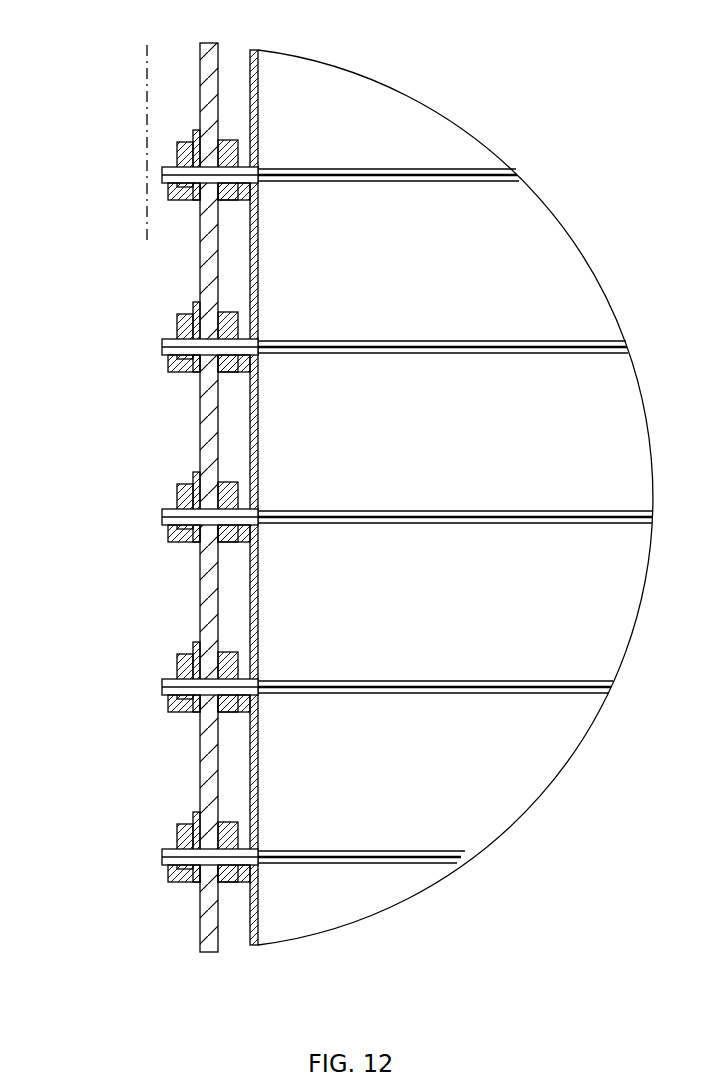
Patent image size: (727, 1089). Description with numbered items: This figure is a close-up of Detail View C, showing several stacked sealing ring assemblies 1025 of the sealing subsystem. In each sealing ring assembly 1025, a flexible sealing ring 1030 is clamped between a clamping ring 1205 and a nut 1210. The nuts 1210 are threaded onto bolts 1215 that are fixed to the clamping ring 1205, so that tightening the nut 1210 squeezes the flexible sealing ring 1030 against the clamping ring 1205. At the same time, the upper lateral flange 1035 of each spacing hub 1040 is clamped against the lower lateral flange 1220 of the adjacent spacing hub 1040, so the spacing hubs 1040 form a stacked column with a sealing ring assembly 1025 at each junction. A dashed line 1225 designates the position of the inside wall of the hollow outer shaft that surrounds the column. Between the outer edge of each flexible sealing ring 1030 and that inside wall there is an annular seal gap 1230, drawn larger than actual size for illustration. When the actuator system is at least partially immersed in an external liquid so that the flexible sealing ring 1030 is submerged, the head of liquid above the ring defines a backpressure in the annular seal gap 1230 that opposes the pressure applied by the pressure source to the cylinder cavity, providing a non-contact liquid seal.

The Detail View C is at (460, 135).
The spacing hub 1040 is at (438, 280).
The dashed line 1225 is at (147, 82).
The annular seal gap 1230 is at (160, 190).
The lower lateral flange 1220 is at (131, 334).
The upper lateral flange 1035 is at (134, 365).
The sealing ring assembly 1025 is at (155, 540).
The bolt 1215 is at (115, 669).
The nut 1210 is at (131, 682).
The flexible sealing ring 1030 is at (141, 720).
The clamping ring 1205 is at (169, 750).